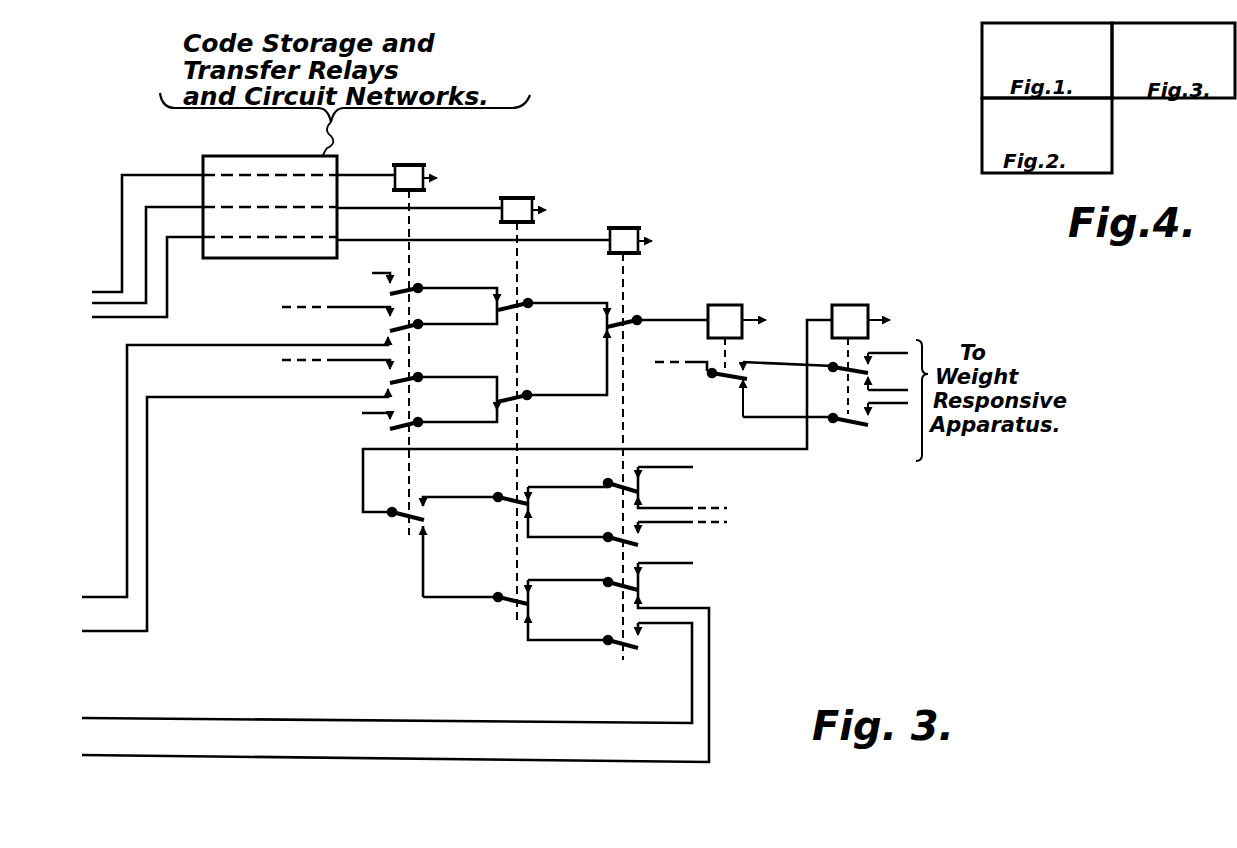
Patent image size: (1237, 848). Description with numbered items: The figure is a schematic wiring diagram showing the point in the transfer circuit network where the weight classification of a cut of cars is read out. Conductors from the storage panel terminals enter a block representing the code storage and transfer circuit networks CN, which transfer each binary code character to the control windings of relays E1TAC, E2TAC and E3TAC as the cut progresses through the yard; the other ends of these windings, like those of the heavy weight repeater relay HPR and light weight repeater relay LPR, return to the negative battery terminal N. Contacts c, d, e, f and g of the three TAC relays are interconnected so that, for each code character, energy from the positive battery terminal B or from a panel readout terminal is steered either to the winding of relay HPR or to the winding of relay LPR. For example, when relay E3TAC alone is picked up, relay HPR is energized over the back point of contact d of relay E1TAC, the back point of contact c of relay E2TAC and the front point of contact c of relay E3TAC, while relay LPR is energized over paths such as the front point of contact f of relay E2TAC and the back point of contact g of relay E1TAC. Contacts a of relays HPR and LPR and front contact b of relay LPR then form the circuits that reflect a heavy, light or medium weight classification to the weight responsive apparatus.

The code storage and transfer circuit networks CN is at (270, 220).
The relay E1TAC is at (408, 338).
The relay E2TAC is at (516, 397).
The relay E3TAC is at (624, 432).
The heavy weight repeater relay HPR is at (722, 323).
The light weight repeater relay LPR is at (845, 346).
The positive battery terminal B is at (528, 420).
The negative battery terminal N is at (666, 250).
The contact a is at (799, 370).
The contact b is at (860, 424).
The contact c is at (522, 295).
The contact d is at (514, 396).
The contact e is at (618, 534).
The contact f is at (618, 579).
The contact g is at (620, 637).